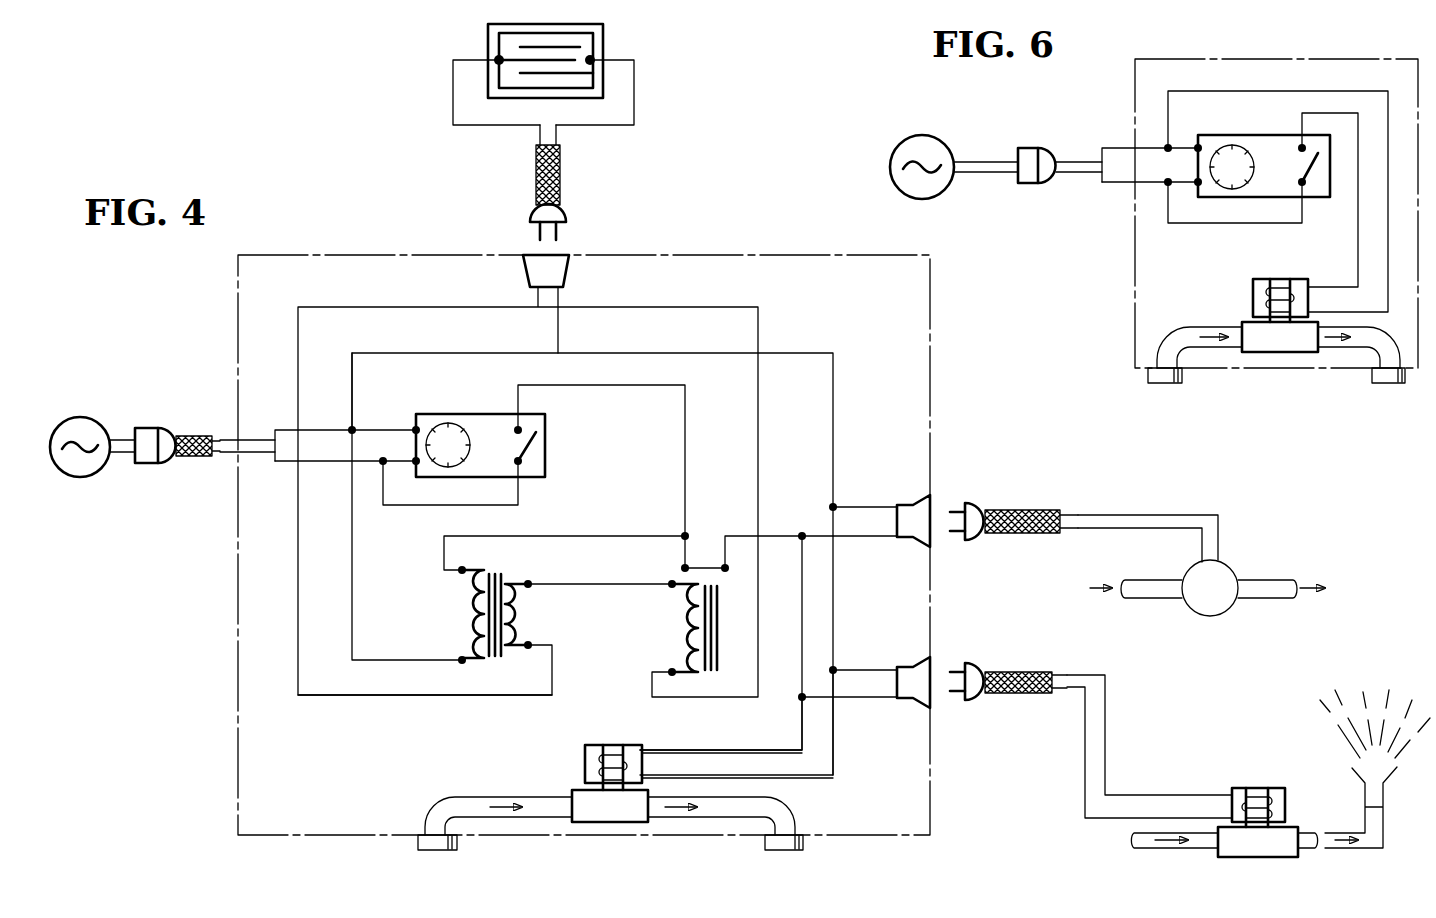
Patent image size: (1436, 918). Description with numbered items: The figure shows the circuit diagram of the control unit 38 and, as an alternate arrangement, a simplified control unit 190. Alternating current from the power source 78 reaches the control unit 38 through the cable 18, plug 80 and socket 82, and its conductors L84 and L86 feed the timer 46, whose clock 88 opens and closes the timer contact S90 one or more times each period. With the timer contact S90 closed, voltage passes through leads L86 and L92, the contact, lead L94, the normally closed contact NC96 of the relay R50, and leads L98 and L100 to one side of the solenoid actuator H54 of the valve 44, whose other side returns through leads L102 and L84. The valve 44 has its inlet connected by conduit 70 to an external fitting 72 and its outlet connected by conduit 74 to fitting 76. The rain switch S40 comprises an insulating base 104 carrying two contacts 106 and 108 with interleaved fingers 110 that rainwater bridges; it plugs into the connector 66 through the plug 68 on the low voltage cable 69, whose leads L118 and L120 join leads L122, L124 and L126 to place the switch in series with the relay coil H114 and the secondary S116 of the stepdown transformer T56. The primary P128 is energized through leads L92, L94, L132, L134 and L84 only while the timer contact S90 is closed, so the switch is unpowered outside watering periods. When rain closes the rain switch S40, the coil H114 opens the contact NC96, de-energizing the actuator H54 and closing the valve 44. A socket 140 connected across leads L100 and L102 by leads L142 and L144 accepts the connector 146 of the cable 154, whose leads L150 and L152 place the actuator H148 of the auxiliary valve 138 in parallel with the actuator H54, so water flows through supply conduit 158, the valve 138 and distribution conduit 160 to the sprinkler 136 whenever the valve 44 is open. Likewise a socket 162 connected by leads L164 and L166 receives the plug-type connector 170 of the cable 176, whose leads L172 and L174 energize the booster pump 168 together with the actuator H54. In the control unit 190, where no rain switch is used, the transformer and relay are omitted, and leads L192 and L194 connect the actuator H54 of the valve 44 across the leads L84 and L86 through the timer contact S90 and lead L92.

In FIG. 4, the control unit 38 is at (312, 252).
In FIG. 4, the rain switch S40 is at (526, 49).
In FIG. 4, the insulating base 104 is at (603, 40).
In FIG. 4, the contact 106 is at (604, 82).
In FIG. 4, the contact 108 is at (492, 48).
In FIG. 4, the interleaved fingers 110 is at (548, 42).
In FIG. 4, the lead L118 is at (634, 125).
In FIG. 4, the lead L120 is at (453, 125).
In FIG. 4, the low voltage cable 69 is at (536, 173).
In FIG. 4, the plug 68 is at (566, 213).
In FIG. 4, the electrical connector 66 is at (570, 272).
In FIG. 4, the lead L122 is at (718, 307).
In FIG. 4, the power source 78 is at (86, 418).
In FIG. 6, the power source 78 is at (938, 135).
In FIG. 4, the cable 18 is at (195, 433).
In FIG. 4, the socket 82 is at (148, 465).
In FIG. 6, the socket 82 is at (1026, 147).
In FIG. 4, the plug 80 is at (167, 465).
In FIG. 6, the plug 80 is at (1050, 150).
In FIG. 4, the conductor L84 is at (324, 428).
In FIG. 6, the conductor L84 is at (1110, 147).
In FIG. 4, the conductor L86 is at (326, 463).
In FIG. 6, the conductor L86 is at (1120, 183).
In FIG. 4, the timer 46 is at (504, 419).
In FIG. 6, the timer 46 is at (1272, 160).
In FIG. 4, the clock 88 is at (433, 425).
In FIG. 6, the clock 88 is at (1228, 147).
In FIG. 4, the timer contact S90 is at (545, 447).
In FIG. 6, the timer contact S90 is at (1312, 175).
In FIG. 4, the lead L92 is at (518, 505).
In FIG. 6, the lead L92 is at (1230, 223).
In FIG. 4, the lead L94 is at (685, 440).
In FIG. 4, the lead L132 is at (590, 536).
In FIG. 4, the lead L134 is at (353, 560).
In FIG. 4, the lead L126 is at (385, 695).
In FIG. 4, the stepdown transformer T56 is at (486, 615).
In FIG. 4, the primary P128 is at (468, 643).
In FIG. 4, the secondary S116 is at (518, 616).
In FIG. 4, the lead L124 is at (602, 584).
In FIG. 4, the relay R50 is at (713, 606).
In FIG. 4, the relay coil H114 is at (682, 628).
In FIG. 4, the normally closed contact NC96 is at (692, 565).
In FIG. 4, the lead L98 is at (802, 535).
In FIG. 4, the lead L100 is at (802, 740).
In FIG. 4, the lead L102 is at (835, 768).
In FIG. 4, the lead L164 is at (845, 507).
In FIG. 4, the lead L166 is at (852, 537).
In FIG. 4, the socket 162 is at (908, 500).
In FIG. 4, the lead L142 is at (855, 670).
In FIG. 4, the lead L144 is at (852, 698).
In FIG. 4, the socket 140 is at (910, 663).
In FIG. 4, the solenoid actuator H54 is at (590, 745).
In FIG. 6, the solenoid actuator H54 is at (1255, 282).
In FIG. 4, the valve 44 is at (575, 790).
In FIG. 6, the valve 44 is at (1290, 348).
In FIG. 4, the conduit 70 is at (458, 797).
In FIG. 6, the conduit 70 is at (1188, 328).
In FIG. 4, the conduit 74 is at (796, 806).
In FIG. 6, the conduit 74 is at (1392, 348).
In FIG. 4, the fitting 72 is at (456, 847).
In FIG. 6, the fitting 72 is at (1180, 383).
In FIG. 4, the fitting 76 is at (803, 847).
In FIG. 6, the fitting 76 is at (1400, 383).
In FIG. 4, the plug-type connector 170 is at (985, 507).
In FIG. 4, the external cable 176 is at (1043, 510).
In FIG. 4, the lead L172 is at (1155, 515).
In FIG. 4, the lead L174 is at (1152, 528).
In FIG. 4, the booster pump 168 is at (1235, 570).
In FIG. 4, the connector 146 is at (985, 668).
In FIG. 4, the external power cable 154 is at (1040, 672).
In FIG. 4, the lead L150 is at (1086, 730).
In FIG. 4, the lead L152 is at (1106, 726).
In FIG. 4, the solenoid actuator H148 is at (1283, 788).
In FIG. 4, the auxiliary valve 138 is at (1270, 857).
In FIG. 4, the supply conduit 158 is at (1168, 855).
In FIG. 4, the distribution conduit 160 is at (1312, 848).
In FIG. 4, the sprinkler 136 is at (1365, 792).
In FIG. 6, the control unit 190 is at (1262, 57).
In FIG. 6, the lead L192 is at (1326, 91).
In FIG. 6, the lead L194 is at (1358, 250).